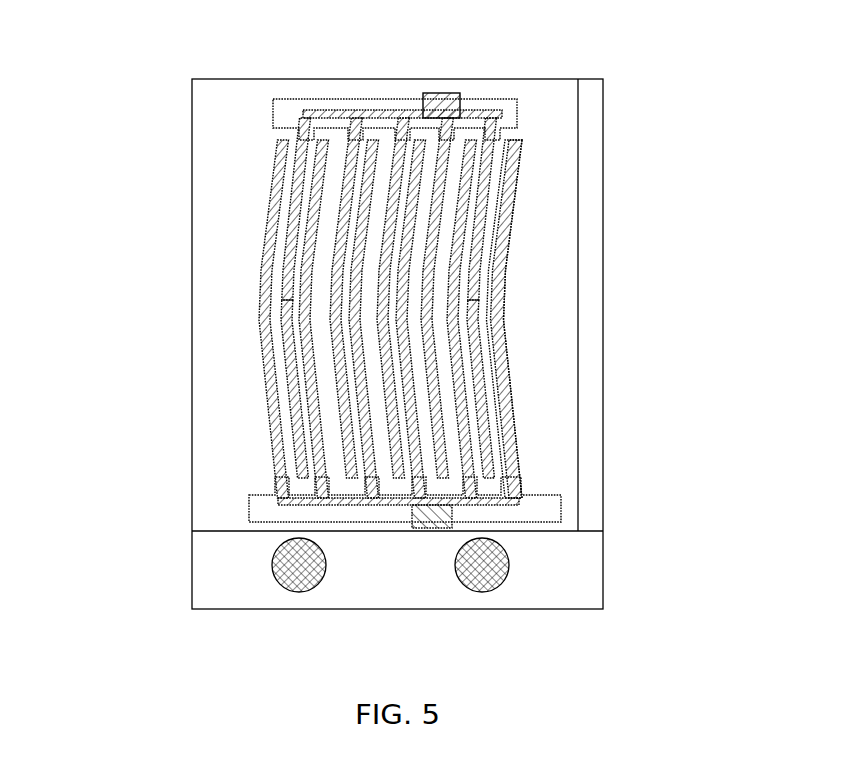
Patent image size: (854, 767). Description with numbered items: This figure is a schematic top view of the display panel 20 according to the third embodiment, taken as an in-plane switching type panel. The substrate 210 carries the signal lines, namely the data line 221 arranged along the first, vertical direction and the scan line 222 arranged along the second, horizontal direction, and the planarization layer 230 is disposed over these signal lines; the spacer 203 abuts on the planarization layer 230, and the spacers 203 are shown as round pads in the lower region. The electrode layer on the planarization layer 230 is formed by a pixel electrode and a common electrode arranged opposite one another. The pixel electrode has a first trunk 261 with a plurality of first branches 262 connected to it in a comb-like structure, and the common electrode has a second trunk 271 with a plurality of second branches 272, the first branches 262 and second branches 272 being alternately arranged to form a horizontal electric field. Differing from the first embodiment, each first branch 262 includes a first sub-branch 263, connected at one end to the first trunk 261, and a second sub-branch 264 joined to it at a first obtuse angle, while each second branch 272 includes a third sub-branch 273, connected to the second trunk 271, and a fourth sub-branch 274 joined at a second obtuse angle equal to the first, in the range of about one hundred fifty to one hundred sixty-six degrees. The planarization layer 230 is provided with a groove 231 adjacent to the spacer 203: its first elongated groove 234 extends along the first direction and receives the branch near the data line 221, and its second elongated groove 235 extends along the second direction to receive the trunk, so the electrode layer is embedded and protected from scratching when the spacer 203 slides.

The display panel 20 is at (136, 44).
The substrate 210 is at (462, 344).
The planarization layer 230 is at (566, 104).
The data line 221 is at (590, 177).
The scan line 222 is at (585, 572).
The spacer 203 is at (299, 567).
The second trunk 271 is at (405, 118).
The second branch 272 is at (183, 298).
The third sub-branch 273 is at (292, 278).
The fourth sub-branch 274 is at (290, 352).
The first branch 262 is at (603, 298).
The first sub-branch 263 is at (505, 272).
The second sub-branch 264 is at (505, 347).
The groove 231 is at (481, 331).
The first elongated groove 234 is at (513, 427).
The second elongated groove 235 is at (452, 500).
The first trunk 261 is at (369, 476).